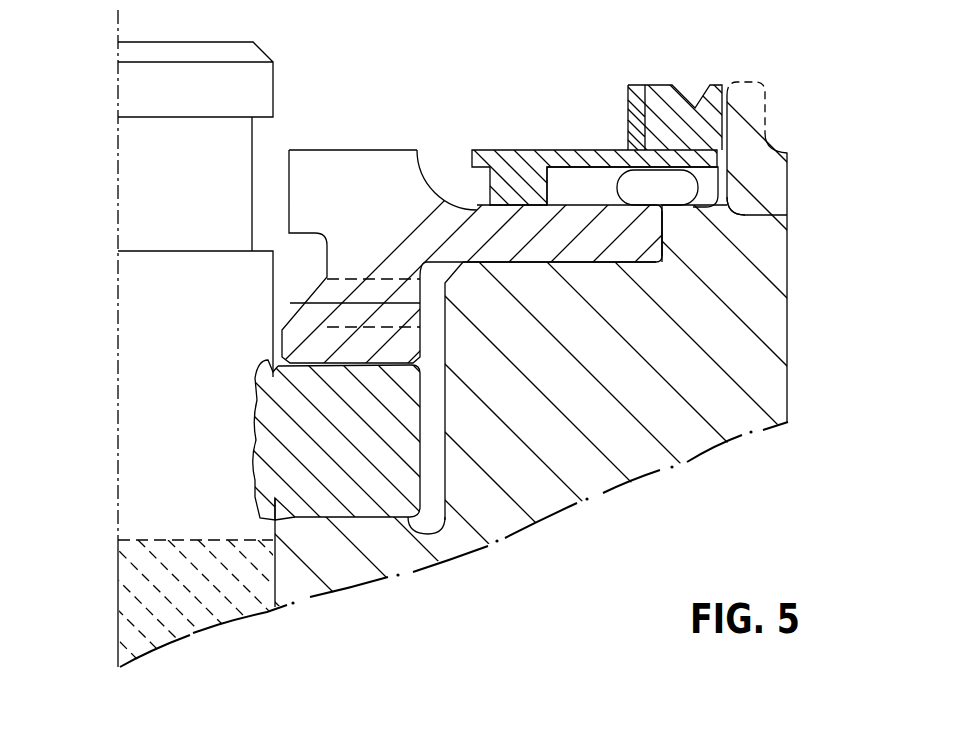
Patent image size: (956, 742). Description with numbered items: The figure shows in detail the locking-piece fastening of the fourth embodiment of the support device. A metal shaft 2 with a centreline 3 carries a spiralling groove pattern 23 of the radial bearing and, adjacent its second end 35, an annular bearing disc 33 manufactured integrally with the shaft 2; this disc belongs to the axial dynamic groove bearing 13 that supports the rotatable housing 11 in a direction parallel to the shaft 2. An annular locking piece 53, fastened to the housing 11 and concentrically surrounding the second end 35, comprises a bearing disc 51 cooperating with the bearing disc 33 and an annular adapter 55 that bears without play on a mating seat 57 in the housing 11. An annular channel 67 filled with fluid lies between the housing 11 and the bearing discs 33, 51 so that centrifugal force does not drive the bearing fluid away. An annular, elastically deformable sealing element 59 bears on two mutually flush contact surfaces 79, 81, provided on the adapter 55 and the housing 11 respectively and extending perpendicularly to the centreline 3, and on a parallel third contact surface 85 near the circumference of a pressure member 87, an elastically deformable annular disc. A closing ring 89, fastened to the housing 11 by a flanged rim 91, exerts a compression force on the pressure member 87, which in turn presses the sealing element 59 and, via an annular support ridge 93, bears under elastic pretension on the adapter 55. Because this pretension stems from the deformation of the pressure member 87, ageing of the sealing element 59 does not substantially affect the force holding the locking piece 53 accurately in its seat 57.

The shaft 2 is at (140, 477).
The centreline 3 is at (120, 213).
The housing 11 is at (613, 452).
The axial dynamic groove bearing 13 is at (426, 427).
The spiralling groove pattern 23 is at (140, 585).
The bearing disc 33 is at (287, 440).
The second end of the shaft 35 is at (150, 135).
The bearing disc 51 is at (318, 318).
The locking piece 53 is at (492, 238).
The adapter 55 is at (613, 253).
The seat 57 is at (663, 262).
The sealing element 59 is at (638, 185).
The channel 67 is at (428, 517).
The contact surface 79 is at (585, 200).
The contact surface 81 is at (787, 215).
The third contact surface 85 is at (645, 90).
The pressure member 87 is at (515, 185).
The closing ring 89 is at (668, 100).
The flanged rim 91 is at (715, 103).
The support ridge 93 is at (513, 184).